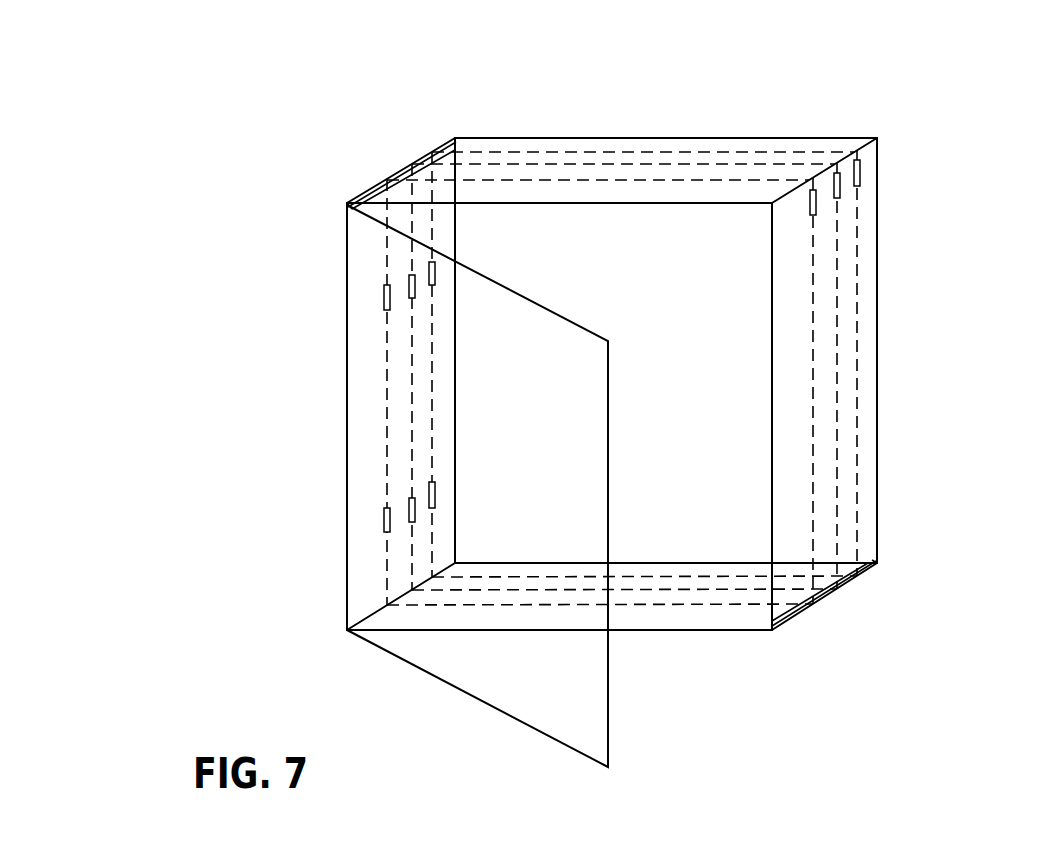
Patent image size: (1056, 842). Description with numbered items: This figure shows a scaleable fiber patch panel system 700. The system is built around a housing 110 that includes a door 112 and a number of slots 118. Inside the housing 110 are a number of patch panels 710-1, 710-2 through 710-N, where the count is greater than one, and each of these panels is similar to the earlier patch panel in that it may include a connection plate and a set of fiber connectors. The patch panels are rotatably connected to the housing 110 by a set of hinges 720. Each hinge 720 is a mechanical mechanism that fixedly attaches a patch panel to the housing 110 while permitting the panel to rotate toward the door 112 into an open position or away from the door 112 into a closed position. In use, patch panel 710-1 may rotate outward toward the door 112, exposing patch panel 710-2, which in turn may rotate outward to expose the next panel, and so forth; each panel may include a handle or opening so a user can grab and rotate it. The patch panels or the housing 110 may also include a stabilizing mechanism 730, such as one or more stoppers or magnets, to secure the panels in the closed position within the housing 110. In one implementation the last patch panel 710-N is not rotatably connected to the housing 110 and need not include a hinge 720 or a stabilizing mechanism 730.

The scaleable fiber patch panel system 700 is at (224, 72).
The housing 110 is at (650, 138).
The slots 118 is at (383, 189).
The door 112 is at (482, 702).
The patch panel 710-1 is at (813, 284).
The patch panel 710-2 is at (837, 350).
The patch panel 710-N is at (860, 417).
The hinges 720 is at (385, 520).
The stabilizing mechanism 730 is at (862, 178).